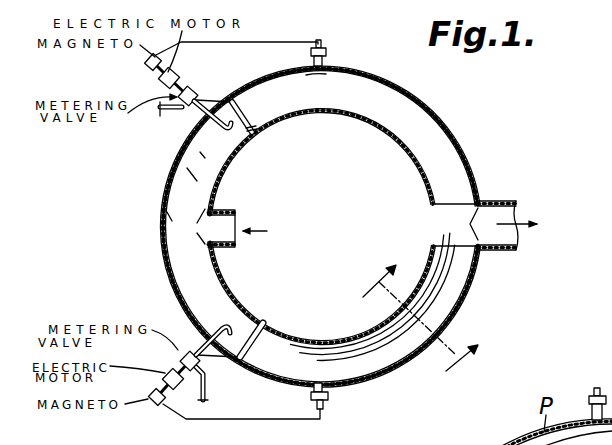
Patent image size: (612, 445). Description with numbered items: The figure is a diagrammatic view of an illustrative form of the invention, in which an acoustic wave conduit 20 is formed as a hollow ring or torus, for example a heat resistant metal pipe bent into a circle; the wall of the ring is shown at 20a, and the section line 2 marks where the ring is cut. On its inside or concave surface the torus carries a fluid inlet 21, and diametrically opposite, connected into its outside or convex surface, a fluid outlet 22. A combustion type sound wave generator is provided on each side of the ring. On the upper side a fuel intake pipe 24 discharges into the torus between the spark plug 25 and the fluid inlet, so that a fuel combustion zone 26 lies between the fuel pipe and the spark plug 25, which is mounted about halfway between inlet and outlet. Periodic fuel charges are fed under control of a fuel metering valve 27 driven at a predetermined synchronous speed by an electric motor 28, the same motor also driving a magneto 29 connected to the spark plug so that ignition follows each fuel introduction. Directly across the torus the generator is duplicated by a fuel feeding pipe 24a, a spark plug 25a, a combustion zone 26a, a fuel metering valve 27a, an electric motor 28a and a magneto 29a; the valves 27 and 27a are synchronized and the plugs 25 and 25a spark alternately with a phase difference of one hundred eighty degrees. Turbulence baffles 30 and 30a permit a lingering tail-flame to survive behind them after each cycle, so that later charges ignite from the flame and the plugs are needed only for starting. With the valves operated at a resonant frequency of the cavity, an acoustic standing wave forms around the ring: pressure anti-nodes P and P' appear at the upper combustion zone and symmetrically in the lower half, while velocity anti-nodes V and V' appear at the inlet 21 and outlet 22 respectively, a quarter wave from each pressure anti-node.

The acoustic wave conduit 20 is at (466, 147).
The outer casing wall 20a is at (431, 122).
The fluid inlet 21 is at (234, 212).
The fluid outlet 22 is at (500, 206).
The fuel intake pipe 24 is at (216, 126).
The fuel feeding pipe 24a is at (227, 323).
The spark plug 25 is at (330, 58).
The spark plug 25a is at (336, 402).
The fuel combustion zone 26 is at (258, 96).
The combustion zone 26a is at (264, 362).
The fuel metering valve 27 is at (195, 93).
The fuel metering valve 27a is at (182, 354).
The electric motor 28 is at (178, 66).
The electric motor 28a is at (167, 374).
The magneto 29 is at (147, 67).
The magneto 29a is at (152, 402).
The turbulence baffle 30 is at (258, 125).
The turbulence baffle 30a is at (273, 322).
The section line 2- 2 is at (418, 329).
The pressure anti-node P is at (281, 128).
The pressure anti-node P' is at (302, 330).
The velocity anti-node V is at (278, 227).
The velocity anti-node V' is at (372, 281).